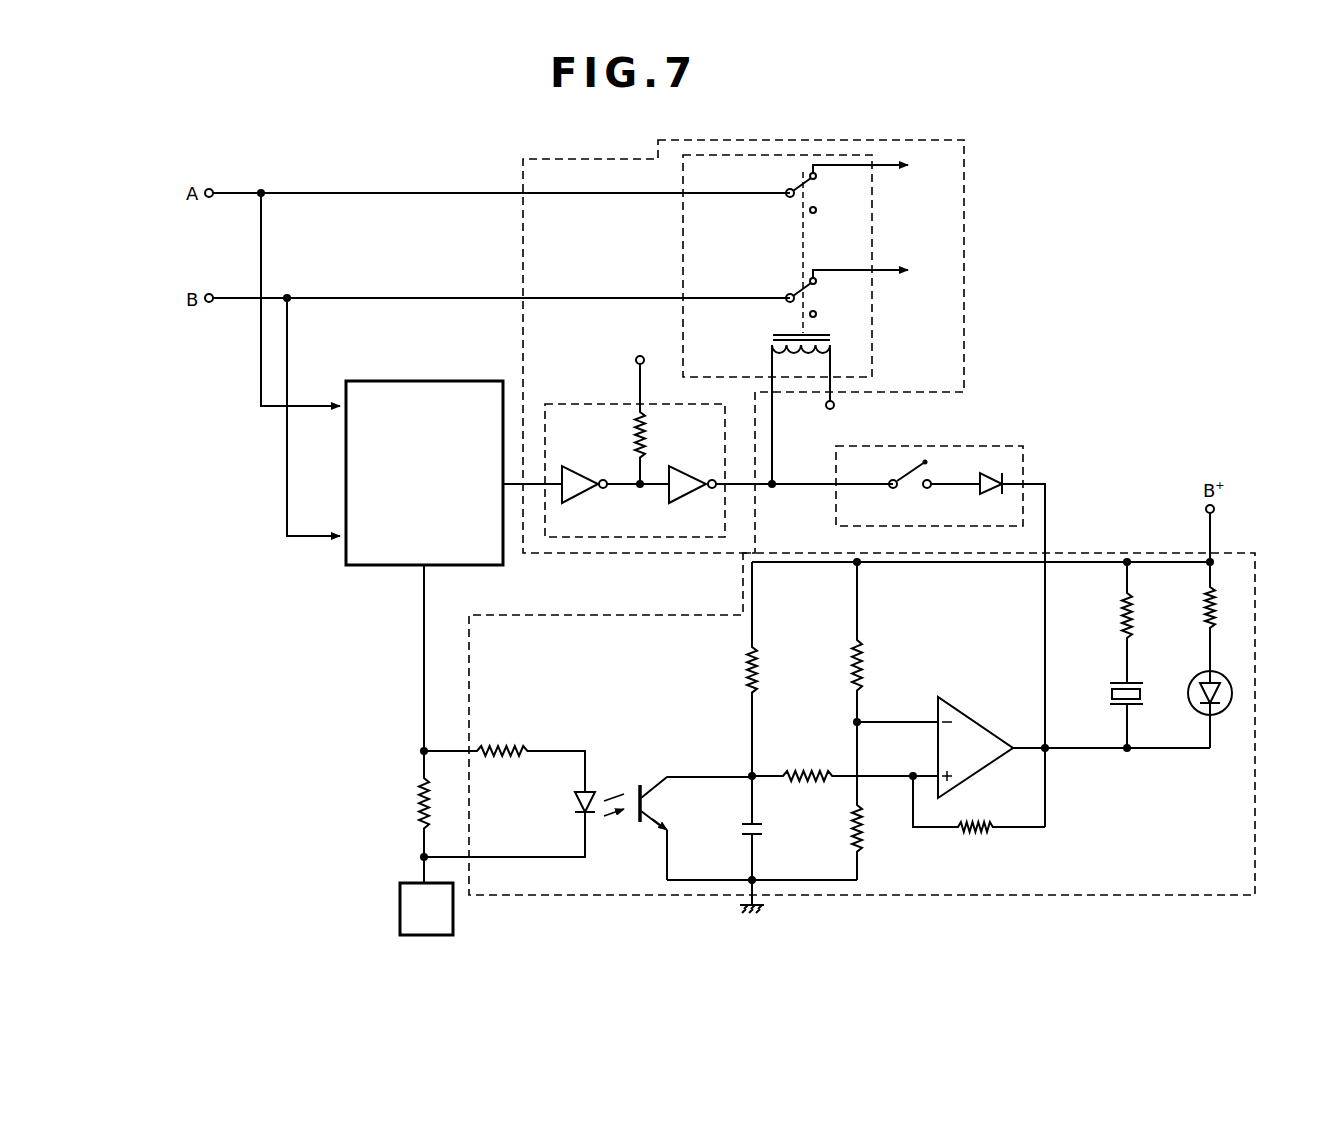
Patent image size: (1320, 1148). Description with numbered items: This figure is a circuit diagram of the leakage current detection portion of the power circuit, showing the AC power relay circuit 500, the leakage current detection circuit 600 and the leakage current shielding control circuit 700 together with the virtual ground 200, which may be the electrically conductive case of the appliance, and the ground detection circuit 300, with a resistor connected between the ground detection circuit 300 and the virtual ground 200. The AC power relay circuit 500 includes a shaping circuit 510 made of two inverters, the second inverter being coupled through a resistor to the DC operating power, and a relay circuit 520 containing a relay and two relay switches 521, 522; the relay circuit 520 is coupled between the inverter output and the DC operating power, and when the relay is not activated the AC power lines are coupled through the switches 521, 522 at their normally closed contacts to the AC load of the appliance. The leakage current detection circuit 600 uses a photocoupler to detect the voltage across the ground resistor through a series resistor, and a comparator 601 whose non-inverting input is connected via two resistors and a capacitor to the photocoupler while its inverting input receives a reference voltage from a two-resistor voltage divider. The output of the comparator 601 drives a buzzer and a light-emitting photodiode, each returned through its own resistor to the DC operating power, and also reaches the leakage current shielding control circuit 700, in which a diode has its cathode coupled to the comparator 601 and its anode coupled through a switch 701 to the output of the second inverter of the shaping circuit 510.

The virtual ground 200 is at (400, 917).
The ground detection circuit 300 is at (361, 566).
The AC power relay circuit 500 is at (780, 346).
The shaping circuit 510 is at (563, 403).
The relay circuit 520 is at (870, 365).
The switch RYS521 521 is at (826, 194).
The switch RYS522 522 is at (826, 299).
The leakage current detection circuit 600 is at (824, 751).
The comparator 601 is at (980, 723).
The leakage current shielding control circuit 700 is at (952, 607).
The switch 701 is at (931, 469).